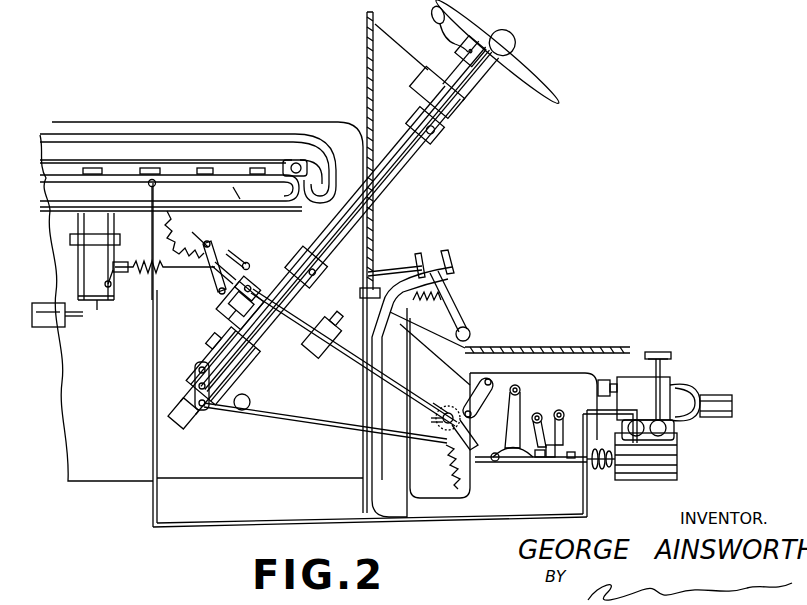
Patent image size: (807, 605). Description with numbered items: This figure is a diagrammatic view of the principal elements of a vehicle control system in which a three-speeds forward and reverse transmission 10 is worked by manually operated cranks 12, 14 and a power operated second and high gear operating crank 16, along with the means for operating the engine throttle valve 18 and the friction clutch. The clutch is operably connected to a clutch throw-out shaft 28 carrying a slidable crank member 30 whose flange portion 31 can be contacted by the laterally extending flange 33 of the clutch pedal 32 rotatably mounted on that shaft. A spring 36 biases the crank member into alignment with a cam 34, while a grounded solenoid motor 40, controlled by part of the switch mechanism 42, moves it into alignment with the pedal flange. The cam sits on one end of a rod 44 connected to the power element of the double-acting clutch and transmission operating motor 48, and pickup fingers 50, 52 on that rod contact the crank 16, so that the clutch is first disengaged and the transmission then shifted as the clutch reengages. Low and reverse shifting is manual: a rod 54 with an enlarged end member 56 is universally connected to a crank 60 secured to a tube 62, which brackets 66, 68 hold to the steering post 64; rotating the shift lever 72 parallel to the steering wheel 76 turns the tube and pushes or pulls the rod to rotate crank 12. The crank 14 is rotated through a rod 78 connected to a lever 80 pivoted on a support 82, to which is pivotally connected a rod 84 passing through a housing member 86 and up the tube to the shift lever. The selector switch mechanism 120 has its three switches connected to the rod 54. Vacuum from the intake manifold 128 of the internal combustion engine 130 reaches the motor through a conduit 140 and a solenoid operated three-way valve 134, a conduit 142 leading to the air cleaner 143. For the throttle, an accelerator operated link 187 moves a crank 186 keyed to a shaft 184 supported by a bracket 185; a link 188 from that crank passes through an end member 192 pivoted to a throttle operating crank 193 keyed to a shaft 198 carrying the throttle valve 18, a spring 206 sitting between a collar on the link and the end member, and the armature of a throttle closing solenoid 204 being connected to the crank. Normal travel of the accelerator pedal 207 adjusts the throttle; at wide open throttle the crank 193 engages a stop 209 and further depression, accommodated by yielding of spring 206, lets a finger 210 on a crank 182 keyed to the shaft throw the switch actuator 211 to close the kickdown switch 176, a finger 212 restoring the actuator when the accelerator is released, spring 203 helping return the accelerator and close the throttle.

The transmission 10 is at (578, 373).
The low and reverse gear operating crank 12 is at (560, 410).
The shift rail selecting crank 14 is at (516, 383).
The second and high gear operating crank 16 is at (553, 458).
The engine throttle valve 18 is at (113, 305).
The clutch throw-out shaft 28 is at (436, 428).
The crank member 30 is at (462, 445).
The flange portion 31 is at (432, 418).
The clutch pedal 32 is at (413, 357).
The laterally extending flange 33 is at (430, 405).
The cam 34 is at (517, 458).
The spring 36 is at (455, 474).
The solenoid motor 40 is at (487, 380).
The switch mechanism 42 is at (216, 303).
The rod 44 is at (497, 462).
The clutch and transmission operating motor 48 is at (667, 467).
The pickup finger 50 is at (540, 463).
The pickup finger 52 is at (577, 462).
The rod 54 is at (357, 333).
The enlarged end member 56 is at (250, 276).
The crank 60 is at (231, 275).
The tube 62 is at (385, 140).
The steering post 64 is at (397, 172).
The bracket 66 is at (295, 250).
The bracket 68 is at (438, 128).
The shift lever 72 is at (430, 27).
The steering wheel 76 is at (532, 73).
The rod 78 is at (330, 425).
The lever 80 is at (195, 371).
The support 82 is at (199, 420).
The rod 84 is at (208, 360).
The housing member 86 is at (213, 347).
The selector switch mechanism 120 is at (323, 343).
The intake manifold 128 is at (95, 185).
The internal combustion engine 130 is at (107, 468).
The solenoid operated three-way valve 134 is at (207, 256).
The conduit 140 is at (155, 432).
The conduit 142 is at (662, 373).
The air cleaner 143 is at (665, 352).
The kickdown switch 176 is at (182, 212).
The crank 182 is at (190, 240).
The shaft 184 is at (224, 252).
The bracket 185 is at (247, 260).
The crank 186 is at (213, 277).
The accelerator operated link 187 is at (393, 260).
The link 188 is at (116, 300).
The end member 192 is at (128, 272).
The throttle operating crank 193 is at (108, 284).
The shaft 198 is at (82, 294).
The spring 203 is at (445, 296).
The throttle closing solenoid 204 is at (47, 327).
The spring 206 is at (150, 262).
The accelerator pedal 207 is at (449, 305).
The stop 209 is at (97, 310).
The finger 210 is at (152, 228).
The switch actuator 211 is at (233, 187).
The finger 212 is at (240, 203).